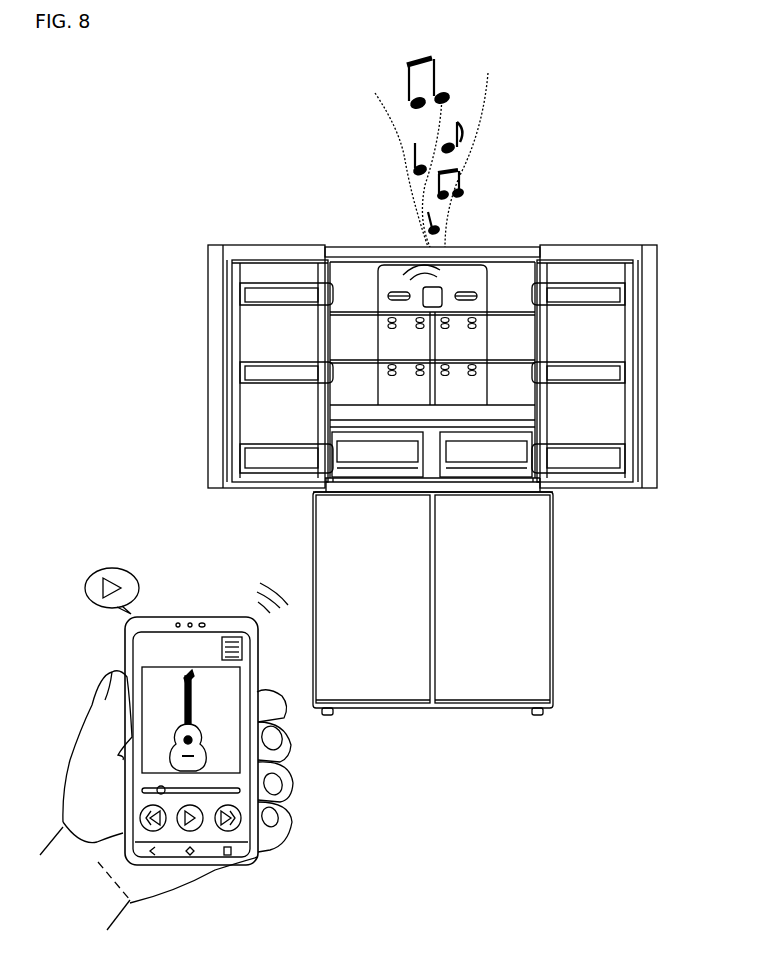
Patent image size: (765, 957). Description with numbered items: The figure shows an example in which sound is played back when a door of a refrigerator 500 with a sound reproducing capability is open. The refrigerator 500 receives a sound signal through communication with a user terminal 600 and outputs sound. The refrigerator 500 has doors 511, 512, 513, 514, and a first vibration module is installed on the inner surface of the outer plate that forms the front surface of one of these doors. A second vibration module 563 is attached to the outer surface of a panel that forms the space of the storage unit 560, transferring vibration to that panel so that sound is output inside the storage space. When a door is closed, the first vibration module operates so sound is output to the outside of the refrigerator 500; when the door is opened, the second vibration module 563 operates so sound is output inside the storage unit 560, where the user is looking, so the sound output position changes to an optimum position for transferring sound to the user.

The refrigerator 500 is at (566, 171).
The door 511 is at (208, 462).
The door 512 is at (658, 462).
The door 513 is at (330, 542).
The door 514 is at (553, 542).
The storage unit 560 is at (410, 238).
The second vibration module 563 is at (440, 250).
The user terminal 600 is at (191, 614).